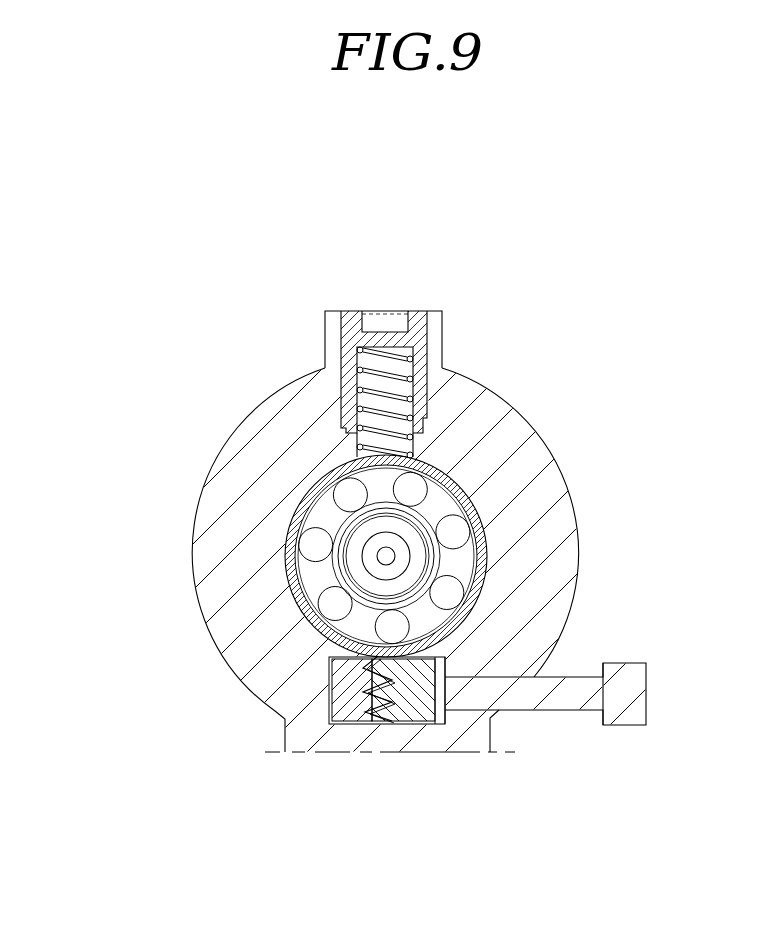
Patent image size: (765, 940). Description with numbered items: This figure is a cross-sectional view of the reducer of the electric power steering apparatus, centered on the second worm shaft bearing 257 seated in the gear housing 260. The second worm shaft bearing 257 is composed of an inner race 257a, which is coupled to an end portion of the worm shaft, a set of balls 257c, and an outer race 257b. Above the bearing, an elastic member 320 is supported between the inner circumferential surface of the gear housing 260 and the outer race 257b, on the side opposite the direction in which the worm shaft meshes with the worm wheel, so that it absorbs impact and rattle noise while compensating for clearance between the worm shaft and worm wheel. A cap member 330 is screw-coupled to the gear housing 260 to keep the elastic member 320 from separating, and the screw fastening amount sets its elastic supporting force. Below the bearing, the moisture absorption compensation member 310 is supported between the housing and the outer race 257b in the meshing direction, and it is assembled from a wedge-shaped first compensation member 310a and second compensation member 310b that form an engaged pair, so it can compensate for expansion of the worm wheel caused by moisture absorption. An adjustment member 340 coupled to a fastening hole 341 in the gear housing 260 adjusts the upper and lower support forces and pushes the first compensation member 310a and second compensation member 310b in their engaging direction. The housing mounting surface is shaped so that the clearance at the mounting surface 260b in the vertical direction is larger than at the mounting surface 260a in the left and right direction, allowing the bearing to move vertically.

The second worm shaft bearing 257 is at (112, 605).
The inner race 257a is at (346, 528).
The outer race 257b is at (300, 525).
The balls 257c is at (315, 548).
The gear housing 260 is at (528, 463).
The mounting surface in the left and right direction 260a is at (490, 557).
The mounting surface in the vertical direction 260b is at (452, 638).
The moisture absorption compensation member 310 is at (365, 837).
The first compensation member 310a is at (350, 700).
The second compensation member 310b is at (410, 700).
The elastic member 320 is at (383, 352).
The cap member 330 is at (417, 325).
The adjustment member 340 is at (575, 688).
The fastening hole 341 is at (515, 662).